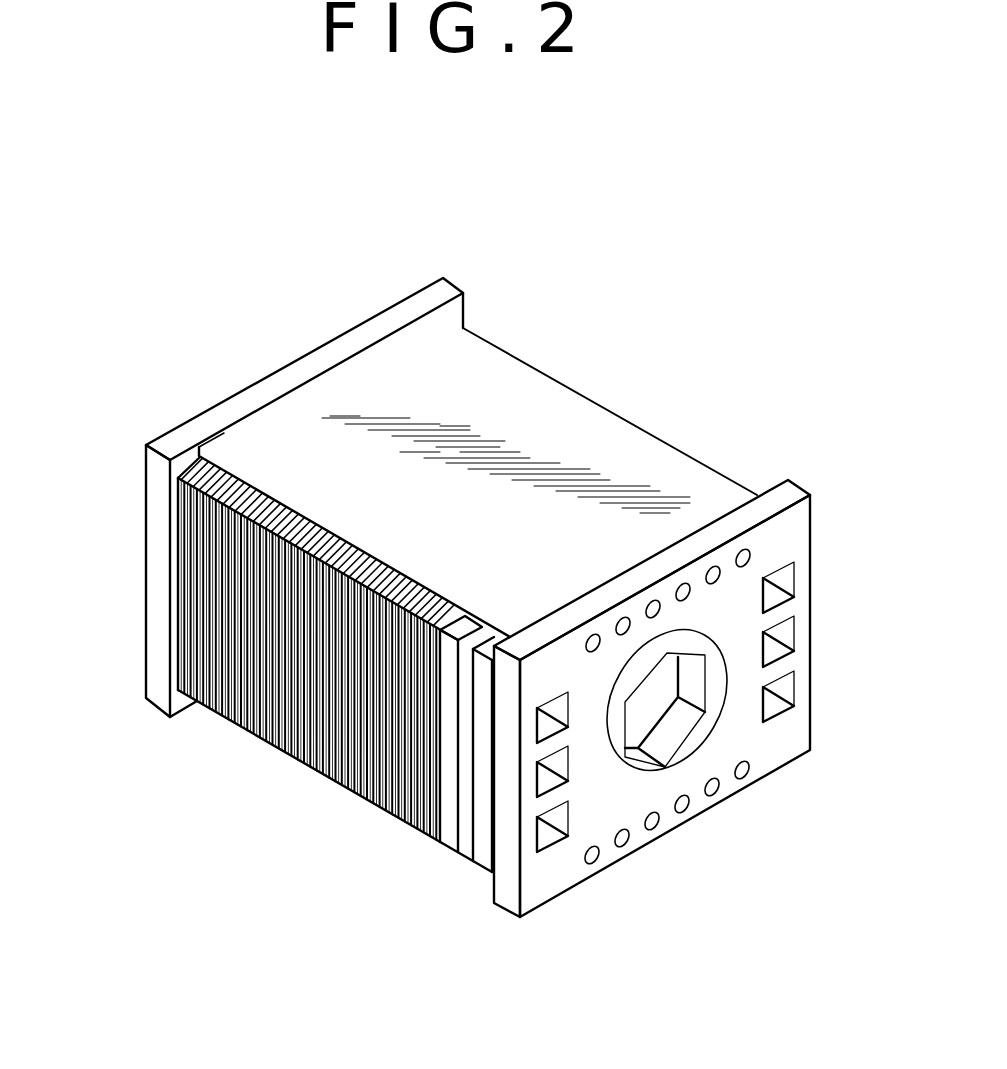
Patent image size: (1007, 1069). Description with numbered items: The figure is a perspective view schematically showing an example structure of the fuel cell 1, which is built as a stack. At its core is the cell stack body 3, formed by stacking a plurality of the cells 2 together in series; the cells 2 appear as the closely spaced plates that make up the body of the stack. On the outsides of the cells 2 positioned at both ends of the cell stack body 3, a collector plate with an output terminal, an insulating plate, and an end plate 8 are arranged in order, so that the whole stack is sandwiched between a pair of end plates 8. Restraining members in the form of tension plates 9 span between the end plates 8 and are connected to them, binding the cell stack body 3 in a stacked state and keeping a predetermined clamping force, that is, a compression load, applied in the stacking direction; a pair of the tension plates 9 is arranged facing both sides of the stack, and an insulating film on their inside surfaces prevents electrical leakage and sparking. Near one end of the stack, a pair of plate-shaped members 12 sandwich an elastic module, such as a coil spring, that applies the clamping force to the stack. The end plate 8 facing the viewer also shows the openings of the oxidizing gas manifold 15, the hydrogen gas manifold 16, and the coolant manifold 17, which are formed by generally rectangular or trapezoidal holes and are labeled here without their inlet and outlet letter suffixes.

The fuel cell 1 is at (150, 407).
The cell 2 is at (357, 776).
The cell stack body 3 is at (262, 748).
The end plate 8 is at (445, 287).
The tension plate 9 is at (556, 425).
The plate-shaped member 12 is at (483, 858).
The oxidizing gas manifold 15 is at (783, 695).
The hydrogen gas manifold 16 is at (783, 580).
The coolant manifold 17 is at (783, 636).